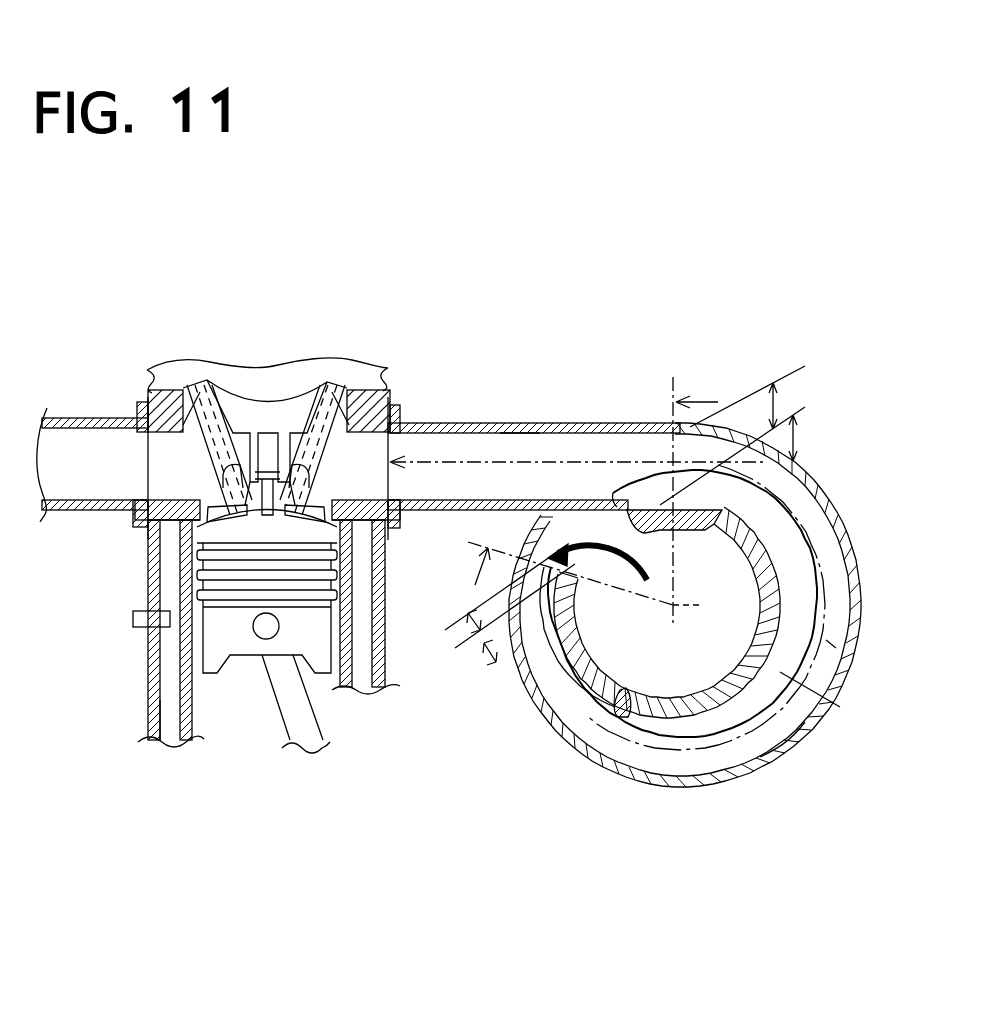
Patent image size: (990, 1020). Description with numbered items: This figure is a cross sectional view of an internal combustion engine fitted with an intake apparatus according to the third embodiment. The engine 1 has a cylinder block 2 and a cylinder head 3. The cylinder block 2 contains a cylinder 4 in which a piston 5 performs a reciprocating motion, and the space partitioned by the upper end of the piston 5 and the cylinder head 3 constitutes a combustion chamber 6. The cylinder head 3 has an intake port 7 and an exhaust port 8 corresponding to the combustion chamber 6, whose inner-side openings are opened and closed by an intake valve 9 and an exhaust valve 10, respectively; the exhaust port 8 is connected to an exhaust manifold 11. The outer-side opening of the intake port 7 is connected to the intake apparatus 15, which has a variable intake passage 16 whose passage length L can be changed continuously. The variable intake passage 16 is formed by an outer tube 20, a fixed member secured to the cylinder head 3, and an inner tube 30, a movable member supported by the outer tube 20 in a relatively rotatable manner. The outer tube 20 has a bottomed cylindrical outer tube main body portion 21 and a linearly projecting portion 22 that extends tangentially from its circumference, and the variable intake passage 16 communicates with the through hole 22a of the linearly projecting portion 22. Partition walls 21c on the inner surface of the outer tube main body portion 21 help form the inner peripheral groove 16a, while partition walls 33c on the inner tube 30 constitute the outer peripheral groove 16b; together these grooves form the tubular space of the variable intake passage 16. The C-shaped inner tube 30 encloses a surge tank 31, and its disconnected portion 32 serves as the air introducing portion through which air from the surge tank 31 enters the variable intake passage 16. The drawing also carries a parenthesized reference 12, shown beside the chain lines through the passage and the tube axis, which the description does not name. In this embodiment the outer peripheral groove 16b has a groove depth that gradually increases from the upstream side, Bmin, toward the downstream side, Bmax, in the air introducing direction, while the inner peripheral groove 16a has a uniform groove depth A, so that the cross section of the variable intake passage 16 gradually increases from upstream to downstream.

The engine 1 is at (152, 358).
The cylinder block 2 is at (147, 686).
The cylinder head 3 is at (270, 390).
The cylinder 4 is at (205, 707).
The piston 5 is at (203, 638).
The combustion chamber 6 is at (222, 533).
The intake port 7 is at (388, 416).
The exhaust port 8 is at (160, 458).
The intake valve 9 is at (350, 395).
The exhaust valve 10 is at (194, 395).
The exhaust manifold 11 is at (78, 418).
The reference axis 12 is at (563, 479).
The intake apparatus 15 is at (701, 613).
The variable intake passage 16 is at (700, 765).
The inner peripheral groove 16a is at (785, 718).
The outer peripheral groove 16b is at (620, 705).
The outer tube 20 is at (739, 605).
The outer tube main body portion 21 is at (853, 680).
The partition wall 21c is at (830, 648).
The linearly projecting portion 22 is at (578, 424).
The through hole 22a is at (523, 433).
The inner tube 30 is at (717, 700).
The surge tank 31 is at (708, 605).
The disconnected portion 32 is at (633, 532).
The partition wall 33c is at (832, 700).
The groove depth A is at (780, 392).
The maximum groove depth Bmax is at (797, 428).
The minimum groove depth Bmin is at (490, 664).
The passage length L is at (815, 554).